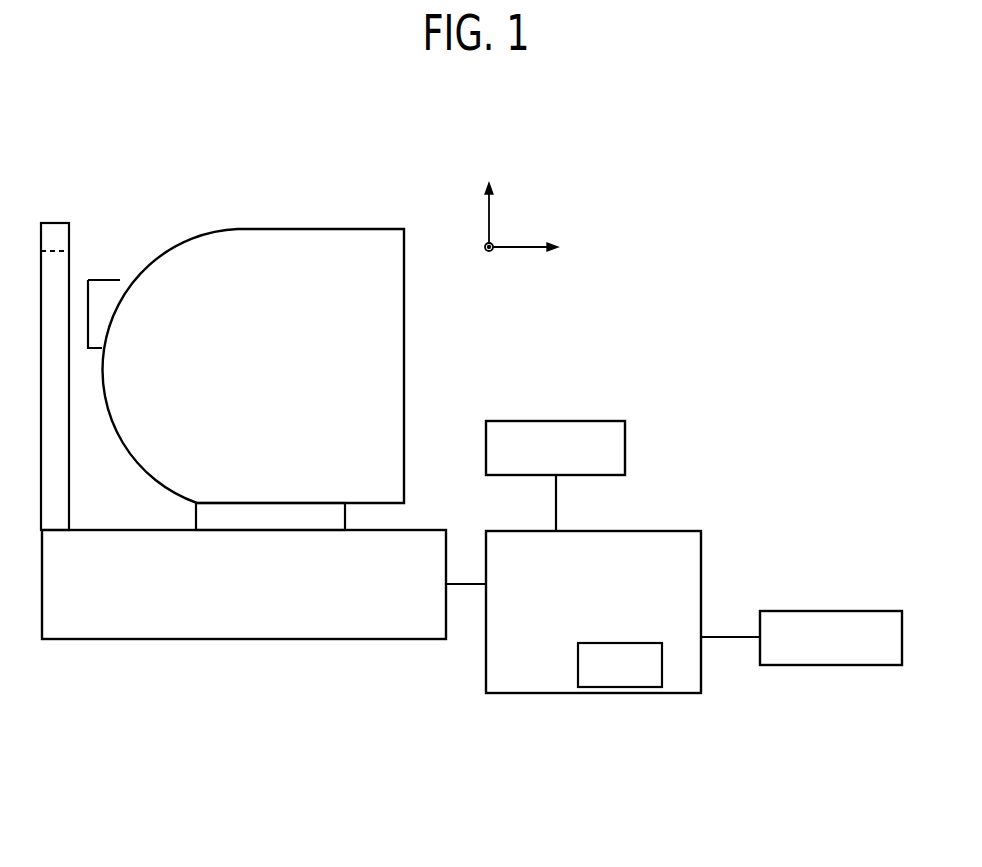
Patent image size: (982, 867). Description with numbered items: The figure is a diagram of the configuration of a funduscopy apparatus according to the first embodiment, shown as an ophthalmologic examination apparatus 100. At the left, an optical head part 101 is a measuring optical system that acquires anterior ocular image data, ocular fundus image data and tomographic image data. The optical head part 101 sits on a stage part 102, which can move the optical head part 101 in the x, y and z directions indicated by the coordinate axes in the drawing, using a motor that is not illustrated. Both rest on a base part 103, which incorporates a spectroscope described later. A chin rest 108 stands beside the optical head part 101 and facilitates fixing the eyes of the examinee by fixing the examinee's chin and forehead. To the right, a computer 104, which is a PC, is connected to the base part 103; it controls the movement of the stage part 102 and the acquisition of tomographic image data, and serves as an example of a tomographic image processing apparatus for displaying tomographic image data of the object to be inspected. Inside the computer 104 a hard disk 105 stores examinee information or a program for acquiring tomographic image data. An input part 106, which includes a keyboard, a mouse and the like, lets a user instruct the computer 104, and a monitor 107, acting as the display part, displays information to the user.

The ophthalmologic examination apparatus 100 is at (617, 183).
The optical head part 101 is at (208, 229).
The stage part 102 is at (345, 520).
The base part 103 is at (173, 640).
The computer 104 is at (608, 531).
The hard disk 105 is at (618, 690).
The input part 106 is at (625, 448).
The monitor 107 is at (797, 611).
The chin rest 108 is at (53, 223).